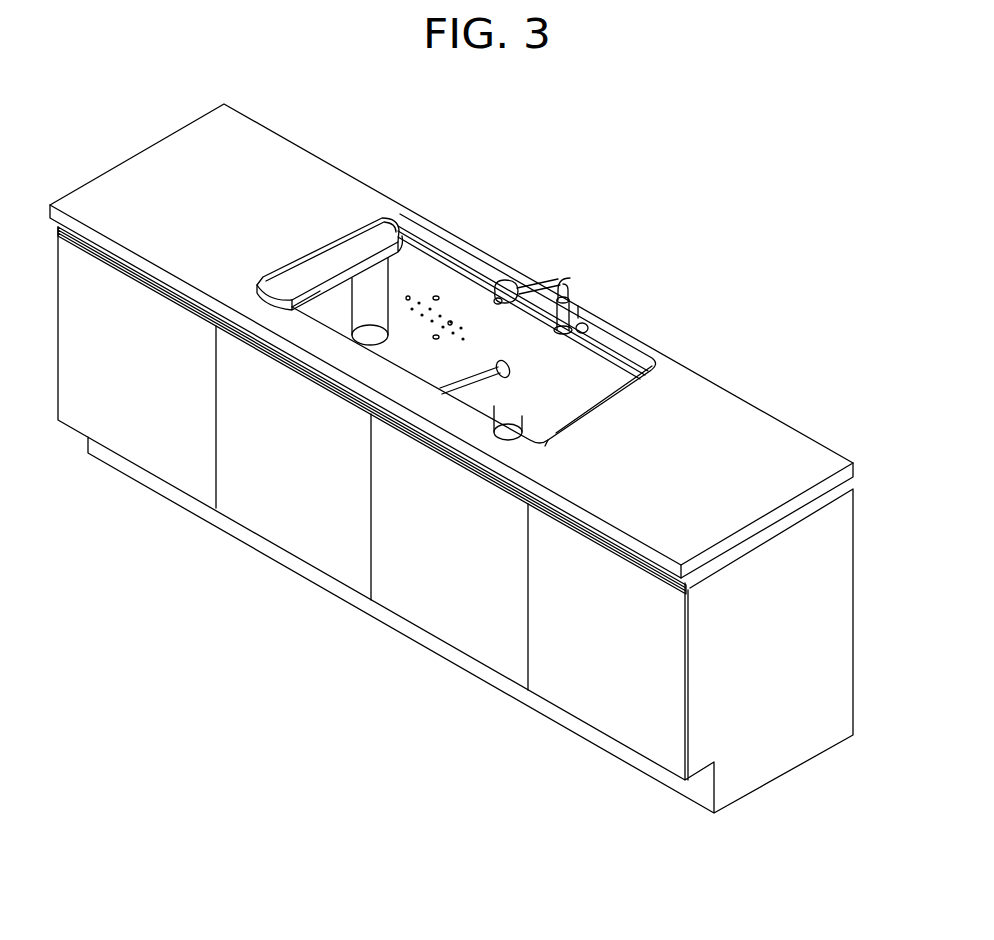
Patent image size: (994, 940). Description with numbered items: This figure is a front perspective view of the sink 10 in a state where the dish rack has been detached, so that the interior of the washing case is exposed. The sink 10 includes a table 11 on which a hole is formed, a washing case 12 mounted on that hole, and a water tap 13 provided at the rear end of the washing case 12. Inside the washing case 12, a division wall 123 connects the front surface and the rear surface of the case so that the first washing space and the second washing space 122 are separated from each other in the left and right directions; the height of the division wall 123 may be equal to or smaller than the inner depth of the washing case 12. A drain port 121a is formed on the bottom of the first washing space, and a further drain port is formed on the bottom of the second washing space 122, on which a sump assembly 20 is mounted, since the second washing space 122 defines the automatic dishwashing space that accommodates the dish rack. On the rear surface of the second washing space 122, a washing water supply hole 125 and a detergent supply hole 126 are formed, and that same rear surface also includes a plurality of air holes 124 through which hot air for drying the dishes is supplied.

The sink 10 is at (455, 458).
The table 11 is at (794, 438).
The washing case 12 is at (606, 322).
The water tap 13 is at (505, 281).
The sump assembly 20 is at (440, 371).
The drain port 121a is at (548, 398).
The second washing space 122 is at (541, 273).
The division wall 123 is at (473, 386).
The air holes 124 is at (408, 296).
The washing water supply hole 125 is at (434, 297).
The detergent supply hole 126 is at (451, 321).